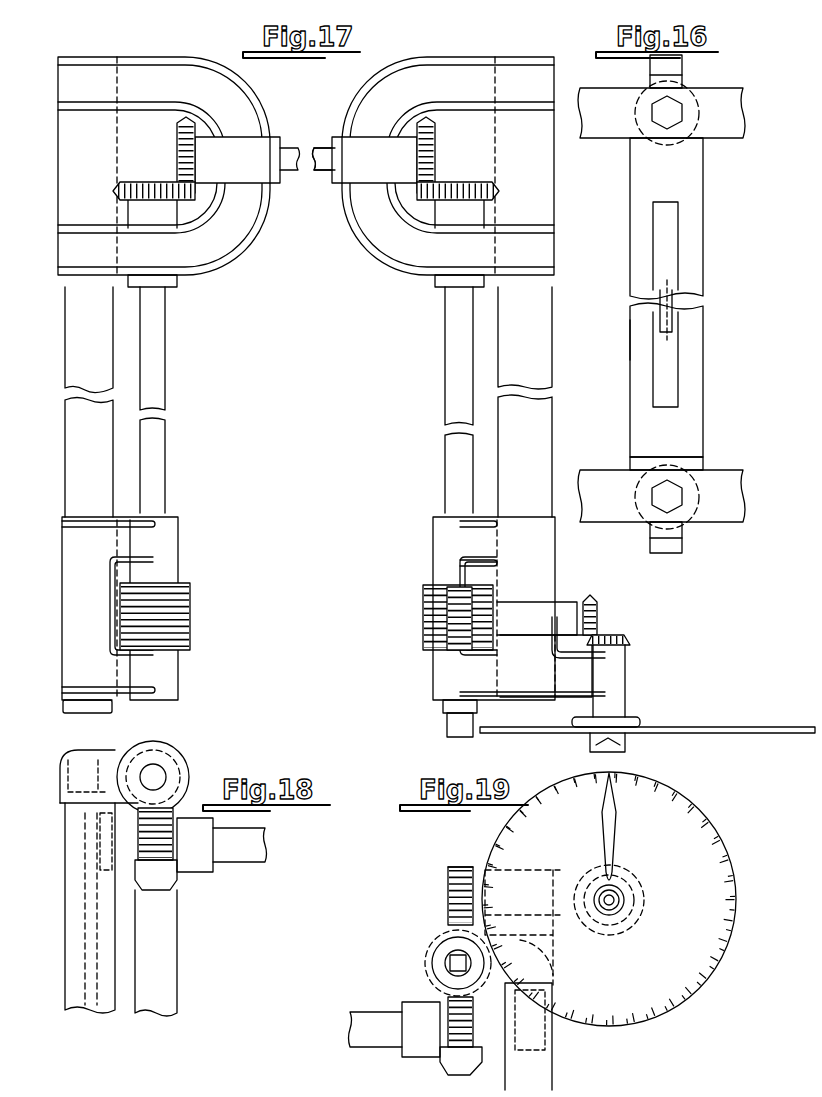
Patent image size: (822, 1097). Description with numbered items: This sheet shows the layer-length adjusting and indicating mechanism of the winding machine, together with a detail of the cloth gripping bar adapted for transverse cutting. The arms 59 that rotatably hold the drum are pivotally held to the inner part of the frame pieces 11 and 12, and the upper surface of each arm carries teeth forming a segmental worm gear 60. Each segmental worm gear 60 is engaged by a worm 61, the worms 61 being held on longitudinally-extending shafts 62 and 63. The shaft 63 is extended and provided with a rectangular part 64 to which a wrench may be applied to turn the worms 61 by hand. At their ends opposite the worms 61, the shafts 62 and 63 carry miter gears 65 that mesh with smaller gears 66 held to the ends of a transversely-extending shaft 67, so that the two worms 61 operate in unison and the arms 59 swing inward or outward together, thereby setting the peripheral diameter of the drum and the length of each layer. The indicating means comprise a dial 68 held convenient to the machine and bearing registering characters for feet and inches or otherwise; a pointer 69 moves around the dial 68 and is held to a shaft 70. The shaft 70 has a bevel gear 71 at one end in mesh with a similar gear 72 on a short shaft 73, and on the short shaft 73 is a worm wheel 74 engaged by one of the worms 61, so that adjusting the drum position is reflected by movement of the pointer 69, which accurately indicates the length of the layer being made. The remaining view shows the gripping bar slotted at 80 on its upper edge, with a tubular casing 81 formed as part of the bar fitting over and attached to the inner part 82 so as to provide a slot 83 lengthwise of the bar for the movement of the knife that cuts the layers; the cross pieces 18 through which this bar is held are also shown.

In FIG. 17, the frame piece 11 is at (540, 432).
In FIG. 17, the frame piece 12 is at (70, 450).
In FIG. 18, the frame piece 12 is at (75, 912).
In FIG. 16, the cross bar 18 is at (612, 130).
In FIG. 18, the arm 59 is at (160, 955).
In FIG. 19, the arm 59 is at (490, 1080).
In FIG. 18, the segmental worm gear 60 is at (162, 850).
In FIG. 19, the segmental worm gear 60 is at (462, 1040).
In FIG. 17, the worm 61 is at (192, 612).
In FIG. 18, the worm 61 is at (178, 752).
In FIG. 19, the worm 61 is at (425, 946).
In FIG. 17, the longitudinally-extending shaft 62 is at (160, 462).
In FIG. 18, the longitudinally-extending shaft 62 is at (153, 775).
In FIG. 17, the longitudinally-extending shaft 63 is at (455, 455).
In FIG. 19, the longitudinally-extending shaft 63 is at (448, 960).
In FIG. 17, the rectangular part 64 is at (446, 724).
In FIG. 19, the rectangular part 64 is at (452, 966).
In FIG. 17, the miter gear 65 is at (118, 188).
In FIG. 17, the smaller gear 66 is at (180, 126).
In FIG. 17, the transversely-extending shaft 67 is at (322, 150).
In FIG. 17, the dial 68 is at (700, 733).
In FIG. 19, the dial 68 is at (650, 1012).
In FIG. 19, the pointer 69 is at (618, 808).
In FIG. 19, the shaft 70 is at (614, 916).
In FIG. 17, the bevel gear 71 is at (630, 642).
In FIG. 17, the bevel gear 72 is at (595, 602).
In FIG. 19, the bevel gear 72 is at (574, 958).
In FIG. 19, the short shaft 73 is at (448, 896).
In FIG. 17, the worm wheel 74 is at (470, 610).
In FIG. 19, the worm wheel 74 is at (458, 866).
In FIG. 16, the slot 80 is at (665, 385).
In FIG. 16, the tubular casing 81 is at (640, 330).
In FIG. 16, the inner part 82 is at (682, 178).
In FIG. 16, the slot 83 is at (665, 321).